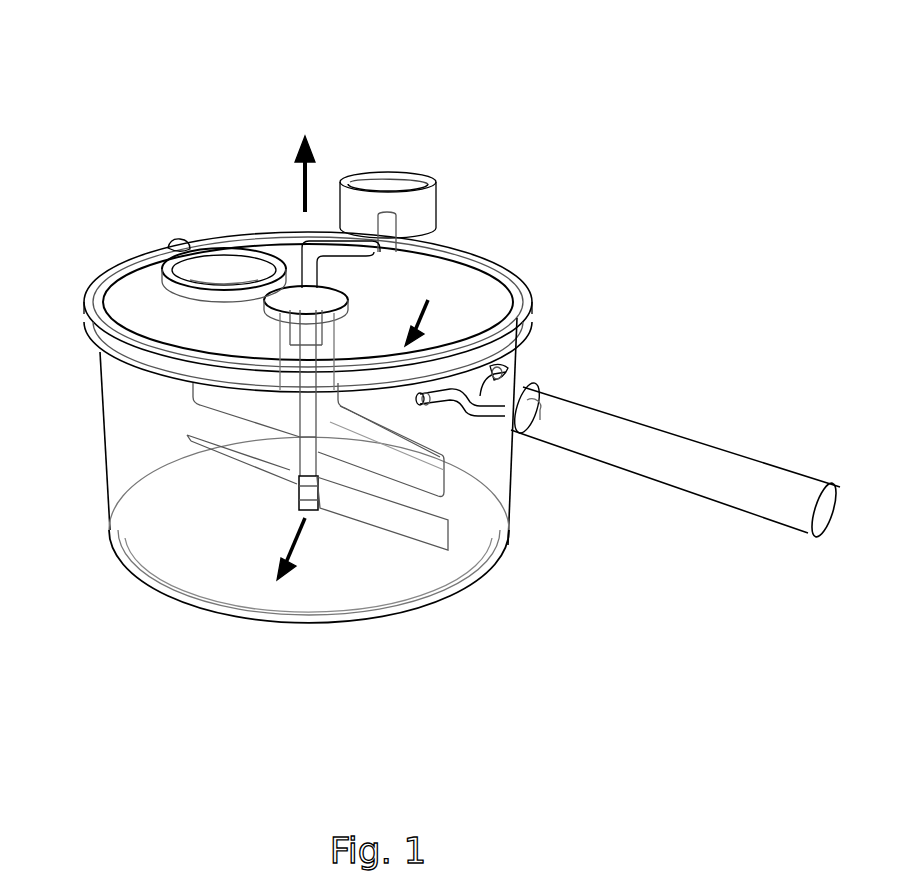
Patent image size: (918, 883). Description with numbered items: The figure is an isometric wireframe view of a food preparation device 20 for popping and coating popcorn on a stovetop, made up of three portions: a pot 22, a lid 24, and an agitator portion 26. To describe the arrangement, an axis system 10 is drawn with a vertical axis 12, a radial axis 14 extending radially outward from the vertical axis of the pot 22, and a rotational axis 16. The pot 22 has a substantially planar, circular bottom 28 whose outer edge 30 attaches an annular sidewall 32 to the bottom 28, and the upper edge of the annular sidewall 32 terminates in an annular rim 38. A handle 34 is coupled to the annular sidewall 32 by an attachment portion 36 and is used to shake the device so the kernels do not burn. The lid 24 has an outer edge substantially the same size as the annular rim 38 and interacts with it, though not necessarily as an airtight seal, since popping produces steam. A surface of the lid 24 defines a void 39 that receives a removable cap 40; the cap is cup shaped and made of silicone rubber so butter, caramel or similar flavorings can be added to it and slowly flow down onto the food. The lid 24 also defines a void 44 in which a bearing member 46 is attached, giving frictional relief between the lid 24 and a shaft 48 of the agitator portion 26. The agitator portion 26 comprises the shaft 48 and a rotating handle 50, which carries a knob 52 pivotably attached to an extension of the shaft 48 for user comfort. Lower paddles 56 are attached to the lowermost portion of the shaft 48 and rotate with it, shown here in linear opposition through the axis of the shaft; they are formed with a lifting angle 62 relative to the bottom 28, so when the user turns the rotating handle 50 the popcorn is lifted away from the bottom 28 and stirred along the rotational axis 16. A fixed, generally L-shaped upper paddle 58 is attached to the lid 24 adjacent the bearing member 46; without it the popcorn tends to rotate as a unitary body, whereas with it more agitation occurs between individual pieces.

The axis system 10 is at (368, 145).
The vertical axis 12 is at (303, 186).
The radial axis 14 is at (294, 548).
The rotational axis 16 is at (430, 305).
The food preparation device 20 is at (150, 110).
The pot 22 is at (268, 503).
The lid 24 is at (492, 317).
The agitator portion 26 is at (299, 511).
The bottom 28 is at (151, 592).
The outer edge 30 is at (363, 623).
The annular sidewall 32 is at (101, 420).
The handle 34 is at (701, 443).
The attachment portion 36 is at (508, 375).
The annular rim 38 is at (97, 283).
The void 39 is at (154, 284).
The removable cap 40 is at (194, 244).
The void 44 is at (273, 313).
The bearing member 46 is at (345, 294).
The shaft 48 is at (317, 465).
The rotating handle 50 is at (498, 160).
The knob 52 is at (395, 177).
The lower paddle 56 is at (427, 556).
The upper paddle 58 is at (444, 473).
The lifting angle 62 is at (445, 548).